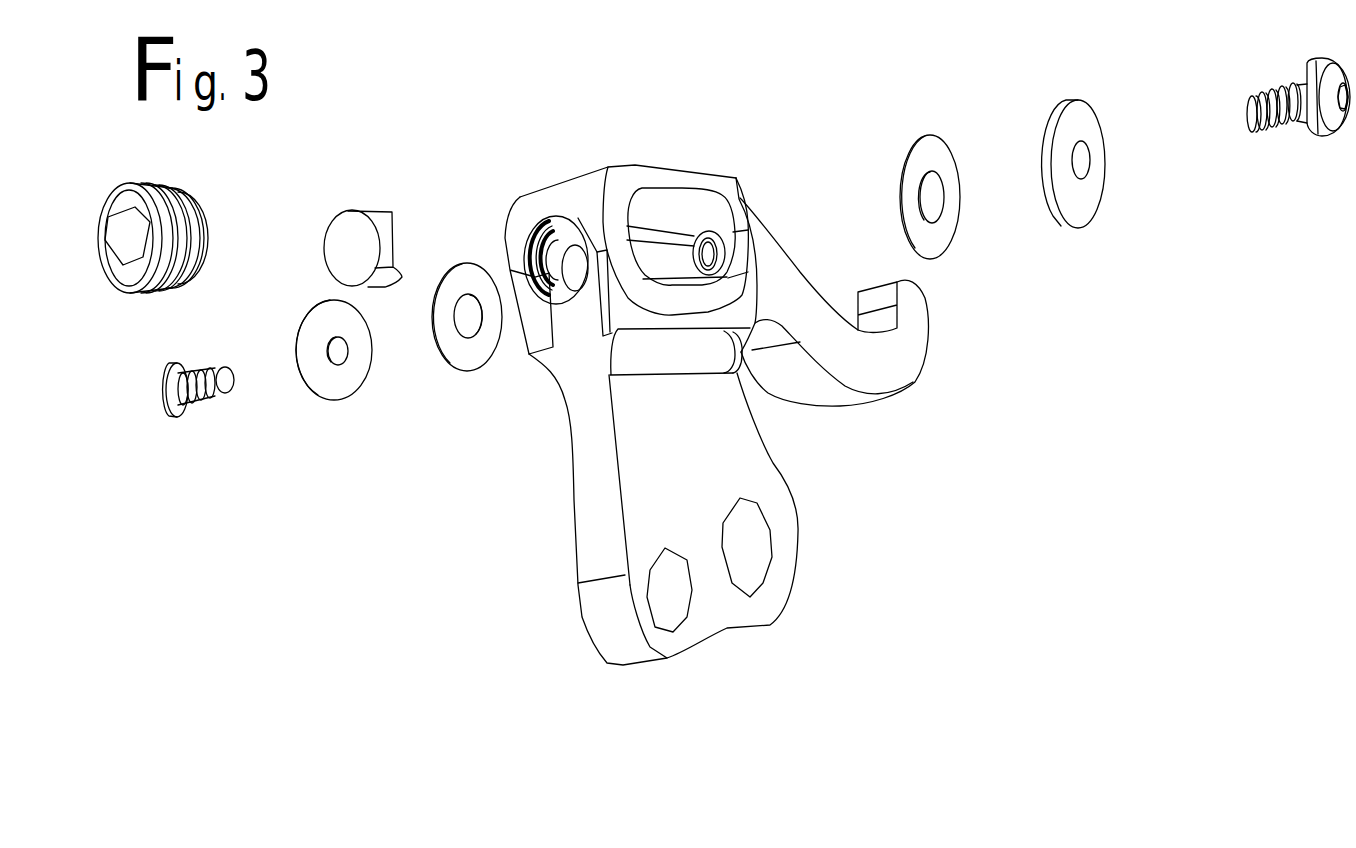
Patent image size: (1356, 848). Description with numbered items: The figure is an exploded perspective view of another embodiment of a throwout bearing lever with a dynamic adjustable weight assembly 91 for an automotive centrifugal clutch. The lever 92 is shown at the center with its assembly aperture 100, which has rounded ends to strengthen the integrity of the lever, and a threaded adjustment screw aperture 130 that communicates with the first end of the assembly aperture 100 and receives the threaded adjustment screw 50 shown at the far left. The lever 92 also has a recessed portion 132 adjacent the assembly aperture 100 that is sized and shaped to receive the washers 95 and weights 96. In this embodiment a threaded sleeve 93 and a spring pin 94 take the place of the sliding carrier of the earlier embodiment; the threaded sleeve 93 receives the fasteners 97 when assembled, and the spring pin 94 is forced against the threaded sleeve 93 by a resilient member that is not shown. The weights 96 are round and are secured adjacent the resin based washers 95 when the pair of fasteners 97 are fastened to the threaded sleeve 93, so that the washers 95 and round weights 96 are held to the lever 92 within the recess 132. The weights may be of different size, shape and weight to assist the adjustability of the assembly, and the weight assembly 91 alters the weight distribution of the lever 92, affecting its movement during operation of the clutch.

The threaded adjustment screw 50 is at (152, 280).
The adjustable weight assembly 91 is at (343, 148).
The lever 92 is at (720, 603).
The threaded sleeve 93 is at (683, 255).
The spring pin 94 is at (385, 224).
The resin based washers 95 is at (474, 358).
The weights 96 is at (345, 383).
The fasteners 97 is at (213, 388).
The assembly aperture 100 is at (643, 240).
The threaded adjustment screw aperture 130 is at (548, 262).
The recessed portion 132 is at (677, 210).